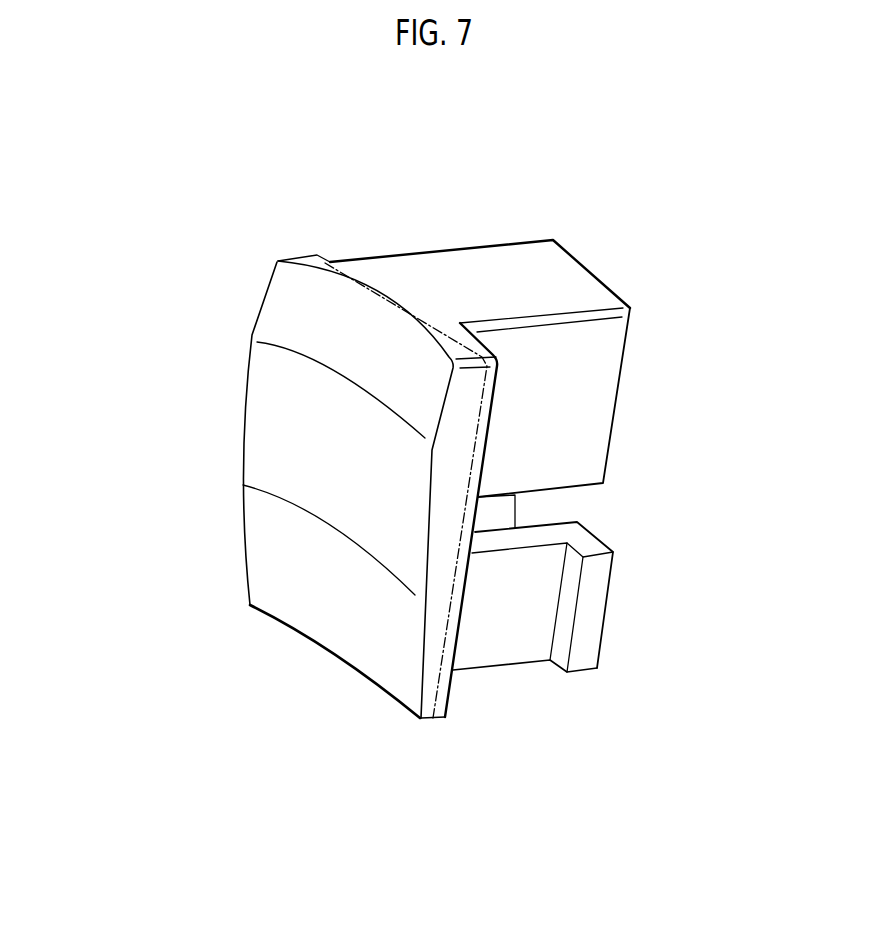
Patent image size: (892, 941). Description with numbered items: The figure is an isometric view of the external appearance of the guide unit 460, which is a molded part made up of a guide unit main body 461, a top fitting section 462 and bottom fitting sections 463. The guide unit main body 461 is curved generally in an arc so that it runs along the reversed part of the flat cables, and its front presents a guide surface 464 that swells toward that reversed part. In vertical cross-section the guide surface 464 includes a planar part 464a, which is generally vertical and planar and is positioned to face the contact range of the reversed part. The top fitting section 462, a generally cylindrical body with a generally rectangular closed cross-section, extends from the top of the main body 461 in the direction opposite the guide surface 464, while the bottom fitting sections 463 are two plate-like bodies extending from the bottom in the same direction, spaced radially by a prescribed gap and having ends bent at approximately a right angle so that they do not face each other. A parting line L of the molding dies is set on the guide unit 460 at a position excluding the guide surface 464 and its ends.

The guide unit 460 is at (242, 273).
The guide unit main body 461 is at (443, 678).
The top fitting section 462 is at (578, 370).
The bottom fitting sections 463 is at (507, 507).
The guide surface 464 is at (300, 580).
The planar part 464a is at (287, 418).
The parting line L is at (391, 290).